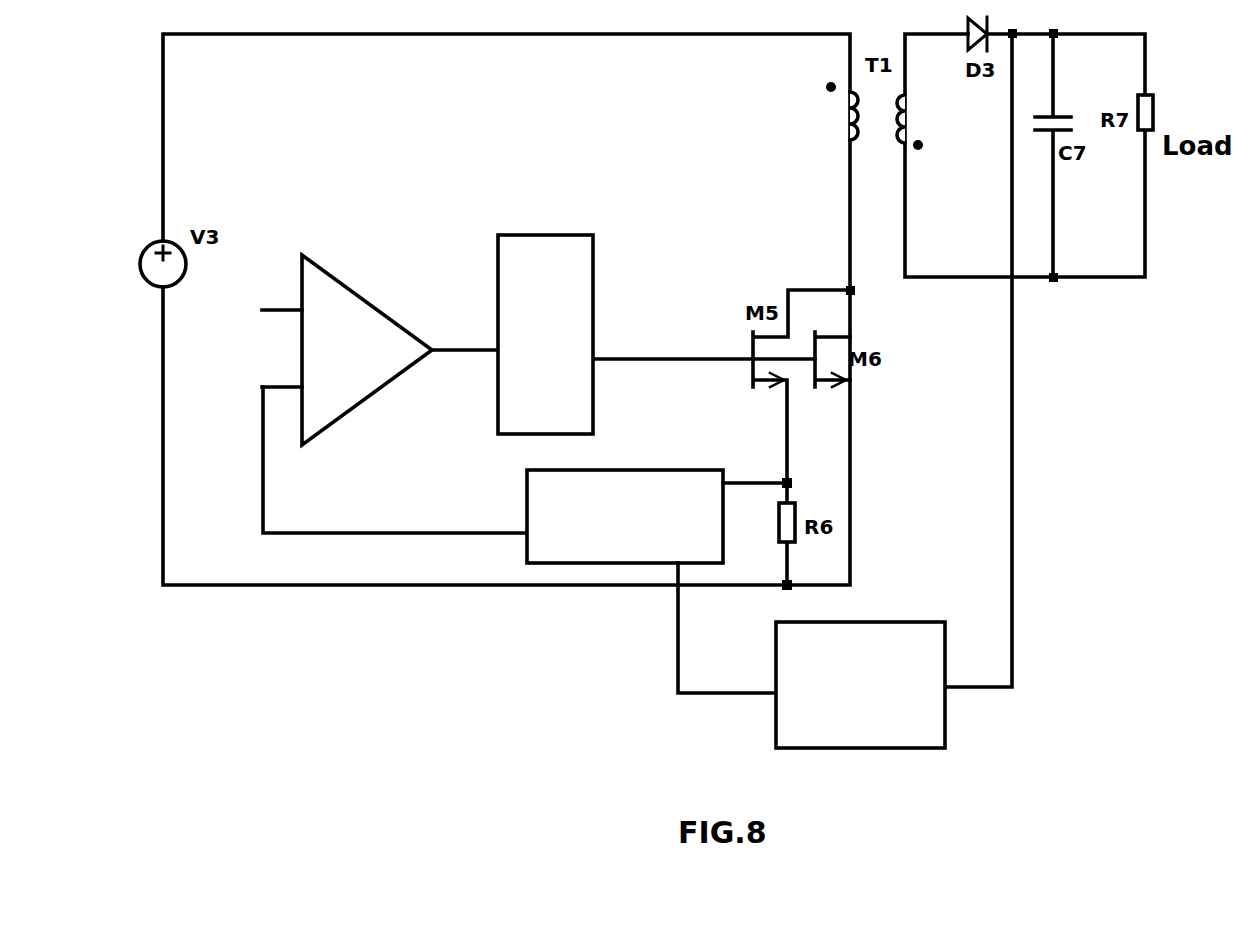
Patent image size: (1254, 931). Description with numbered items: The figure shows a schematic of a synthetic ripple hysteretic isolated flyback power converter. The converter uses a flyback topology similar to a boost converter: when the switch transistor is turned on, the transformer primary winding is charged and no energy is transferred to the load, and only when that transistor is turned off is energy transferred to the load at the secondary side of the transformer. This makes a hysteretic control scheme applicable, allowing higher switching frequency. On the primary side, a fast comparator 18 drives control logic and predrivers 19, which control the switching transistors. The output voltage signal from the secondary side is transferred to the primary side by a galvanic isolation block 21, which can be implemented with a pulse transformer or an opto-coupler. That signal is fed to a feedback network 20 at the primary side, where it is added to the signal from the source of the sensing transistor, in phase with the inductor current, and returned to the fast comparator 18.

The fast comparator 18 is at (342, 282).
The control logic and predrivers 19 is at (568, 234).
The feedback network 20 is at (703, 469).
The galvanic isolation block 21 is at (872, 620).